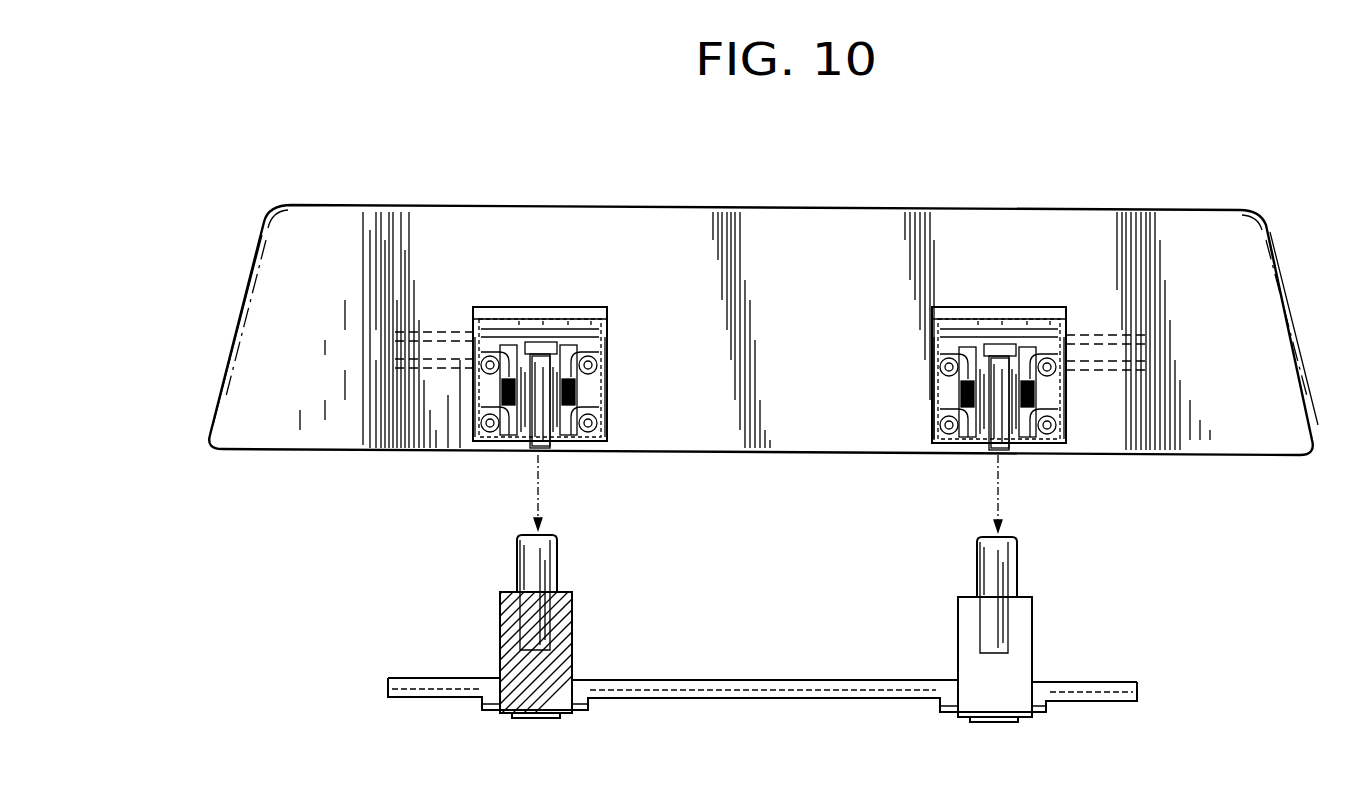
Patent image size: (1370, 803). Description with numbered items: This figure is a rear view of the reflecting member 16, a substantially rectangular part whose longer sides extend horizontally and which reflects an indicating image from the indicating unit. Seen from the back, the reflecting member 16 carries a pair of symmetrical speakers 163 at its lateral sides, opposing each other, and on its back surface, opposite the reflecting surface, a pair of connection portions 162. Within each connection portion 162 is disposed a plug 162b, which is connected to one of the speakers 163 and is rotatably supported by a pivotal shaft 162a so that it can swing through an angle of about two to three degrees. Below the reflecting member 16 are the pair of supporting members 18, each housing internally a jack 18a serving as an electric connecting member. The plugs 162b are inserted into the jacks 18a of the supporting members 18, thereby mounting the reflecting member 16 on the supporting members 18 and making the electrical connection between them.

The reflecting member 16 is at (899, 203).
The supporting member 18 is at (1035, 620).
The jack 18a is at (540, 567).
The connection portion 162 is at (522, 308).
The pivotal shaft 162a is at (513, 392).
The plug 162b is at (540, 408).
The speaker 163 is at (270, 296).